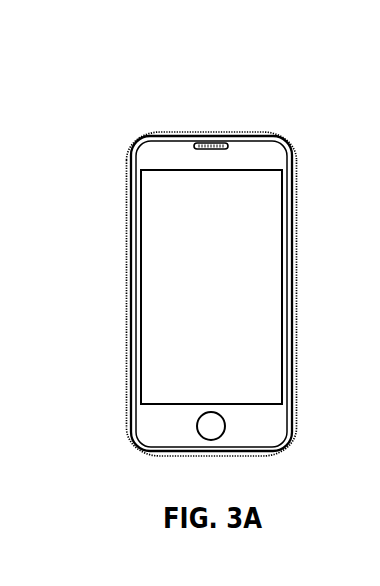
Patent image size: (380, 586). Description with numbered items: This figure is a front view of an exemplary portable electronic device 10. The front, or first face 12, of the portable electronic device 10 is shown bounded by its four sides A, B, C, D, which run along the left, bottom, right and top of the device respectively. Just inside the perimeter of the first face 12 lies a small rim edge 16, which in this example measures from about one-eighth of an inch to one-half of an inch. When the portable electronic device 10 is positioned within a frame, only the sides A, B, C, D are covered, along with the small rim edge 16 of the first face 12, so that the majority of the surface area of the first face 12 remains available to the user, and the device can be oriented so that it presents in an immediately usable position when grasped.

The portable electronic device 10 is at (291, 310).
The first face 12 is at (225, 298).
The rim edge 16 is at (132, 307).
The side A is at (127, 233).
The side B is at (237, 456).
The side C is at (297, 250).
The side D is at (236, 131).